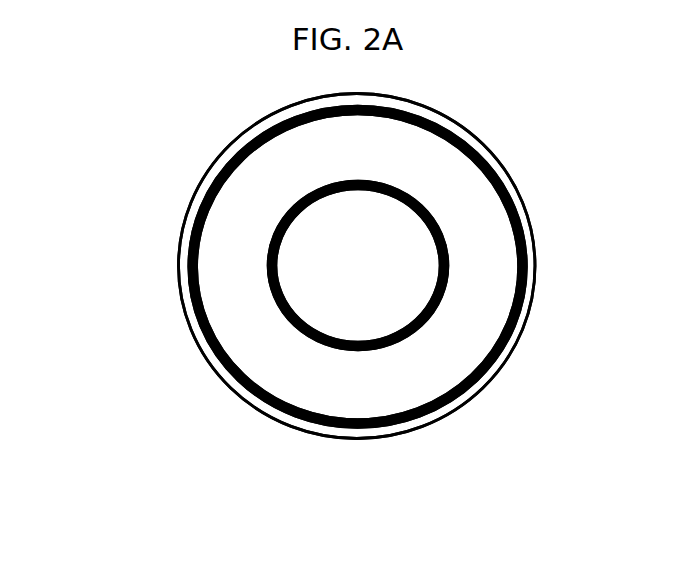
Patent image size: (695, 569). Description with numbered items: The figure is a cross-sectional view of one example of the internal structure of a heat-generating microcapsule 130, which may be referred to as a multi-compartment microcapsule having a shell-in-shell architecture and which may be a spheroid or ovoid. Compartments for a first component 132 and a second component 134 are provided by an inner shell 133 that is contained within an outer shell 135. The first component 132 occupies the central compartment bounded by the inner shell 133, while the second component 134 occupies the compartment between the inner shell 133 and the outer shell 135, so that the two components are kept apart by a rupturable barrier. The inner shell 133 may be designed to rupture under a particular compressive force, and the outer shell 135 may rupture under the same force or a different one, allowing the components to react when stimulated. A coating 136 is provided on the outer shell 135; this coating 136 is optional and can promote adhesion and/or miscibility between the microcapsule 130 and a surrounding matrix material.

The microcapsule 130 is at (48, 102).
The first component 132 is at (362, 247).
The inner shell 133 is at (278, 239).
The second component 134 is at (465, 317).
The outer shell 135 is at (215, 350).
The coating 136 is at (273, 417).